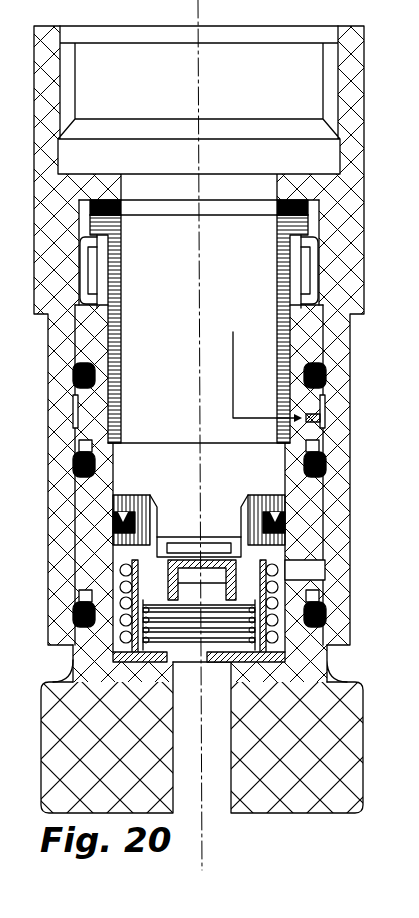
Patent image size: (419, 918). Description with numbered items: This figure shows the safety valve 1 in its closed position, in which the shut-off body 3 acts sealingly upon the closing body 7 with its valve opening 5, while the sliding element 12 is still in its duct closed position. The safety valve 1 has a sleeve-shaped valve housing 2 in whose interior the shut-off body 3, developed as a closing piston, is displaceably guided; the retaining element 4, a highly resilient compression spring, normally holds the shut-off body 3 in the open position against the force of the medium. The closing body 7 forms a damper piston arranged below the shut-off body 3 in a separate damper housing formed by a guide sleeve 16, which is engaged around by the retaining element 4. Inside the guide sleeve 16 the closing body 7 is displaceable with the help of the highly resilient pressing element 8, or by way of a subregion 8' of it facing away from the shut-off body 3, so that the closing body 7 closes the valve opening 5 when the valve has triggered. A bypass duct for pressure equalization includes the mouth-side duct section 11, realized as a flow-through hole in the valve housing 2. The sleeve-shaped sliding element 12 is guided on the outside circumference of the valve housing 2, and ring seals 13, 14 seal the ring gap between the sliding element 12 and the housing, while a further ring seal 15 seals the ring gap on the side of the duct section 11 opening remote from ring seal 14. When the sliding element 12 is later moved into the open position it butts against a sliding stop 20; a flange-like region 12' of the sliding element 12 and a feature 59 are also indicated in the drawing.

The safety valve 1 is at (246, 110).
The valve housing 2 is at (307, 344).
The shut-off body 3 is at (130, 503).
The retaining element 4 is at (110, 644).
The valve opening 5 is at (209, 533).
The closing body 7 is at (188, 556).
The pressing element 8 is at (193, 656).
The subregion of the pressing element 8' is at (329, 654).
The duct section 11 is at (308, 567).
The sliding element 12 is at (242, 441).
The insert flange 12' is at (246, 667).
The ring seal 13 is at (335, 372).
The ring seal 14 is at (337, 461).
The ring seal 15 is at (337, 607).
The guide sleeve 16 is at (130, 655).
The sliding stop 20 is at (232, 654).
The flow channel 59 is at (312, 418).